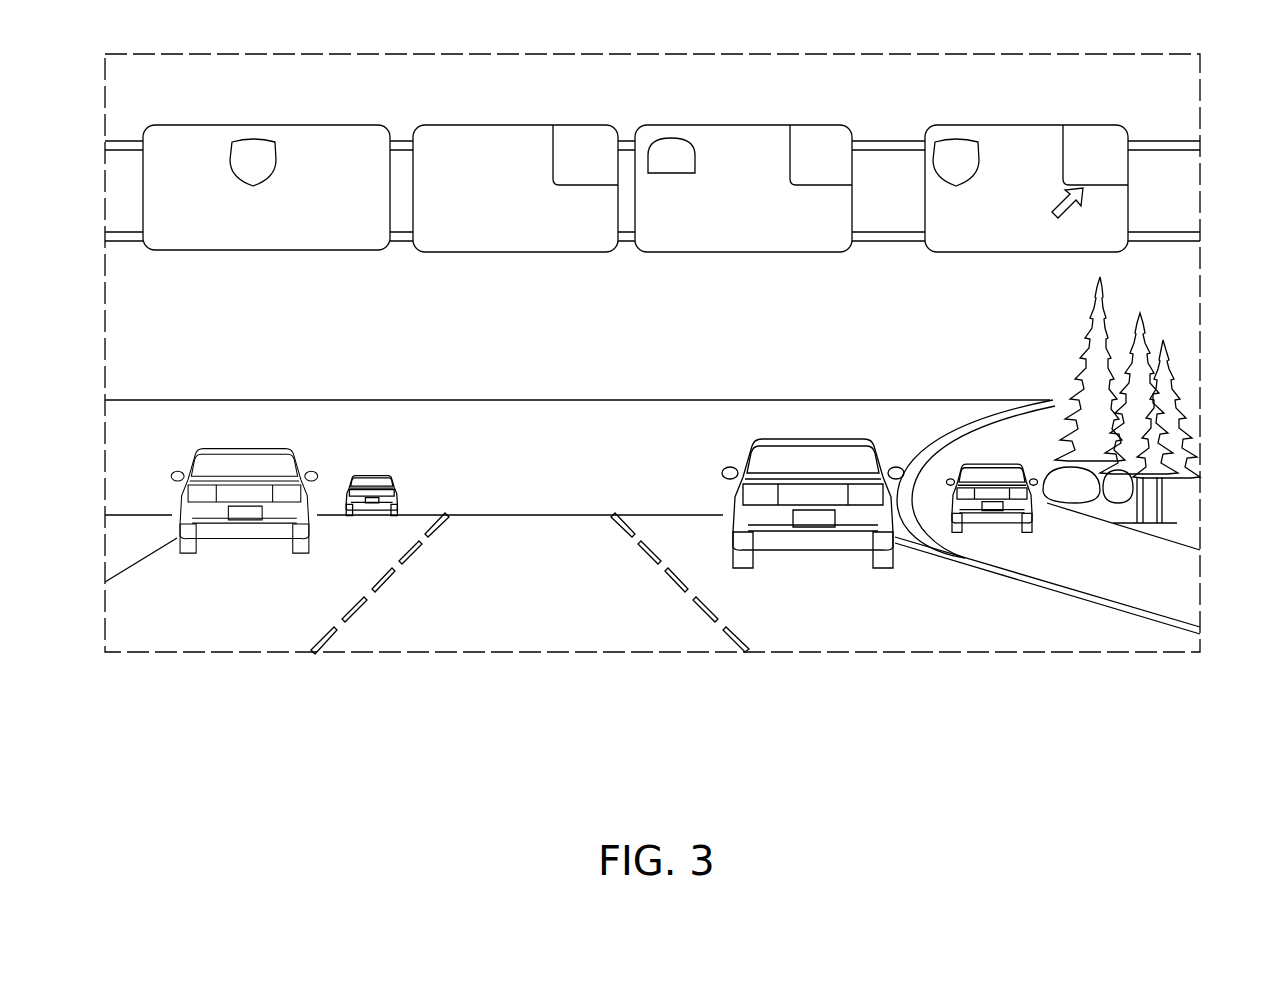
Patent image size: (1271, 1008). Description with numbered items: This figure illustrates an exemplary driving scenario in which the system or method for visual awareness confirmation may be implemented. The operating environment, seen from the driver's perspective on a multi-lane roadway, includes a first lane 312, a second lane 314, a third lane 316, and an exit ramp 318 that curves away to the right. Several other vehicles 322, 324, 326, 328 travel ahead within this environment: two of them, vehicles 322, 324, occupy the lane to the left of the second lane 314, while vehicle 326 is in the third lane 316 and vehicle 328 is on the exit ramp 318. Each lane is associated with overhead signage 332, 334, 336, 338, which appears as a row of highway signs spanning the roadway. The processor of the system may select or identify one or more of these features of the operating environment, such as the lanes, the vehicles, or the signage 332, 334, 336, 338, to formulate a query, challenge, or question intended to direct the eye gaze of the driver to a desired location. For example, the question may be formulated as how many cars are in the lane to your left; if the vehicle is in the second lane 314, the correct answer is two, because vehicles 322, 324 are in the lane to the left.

The first lane 312 is at (228, 622).
The second lane 314 is at (505, 622).
The third lane 316 is at (928, 623).
The exit ramp 318 is at (1173, 582).
The other vehicle 322 is at (245, 445).
The other vehicle 324 is at (368, 470).
The other vehicle 326 is at (803, 433).
The other vehicle 328 is at (993, 462).
The signage 332 is at (263, 123).
The signage 334 is at (507, 125).
The signage 336 is at (740, 125).
The signage 338 is at (1025, 125).